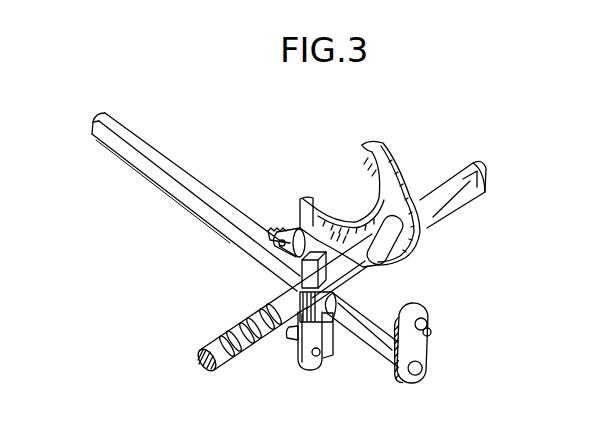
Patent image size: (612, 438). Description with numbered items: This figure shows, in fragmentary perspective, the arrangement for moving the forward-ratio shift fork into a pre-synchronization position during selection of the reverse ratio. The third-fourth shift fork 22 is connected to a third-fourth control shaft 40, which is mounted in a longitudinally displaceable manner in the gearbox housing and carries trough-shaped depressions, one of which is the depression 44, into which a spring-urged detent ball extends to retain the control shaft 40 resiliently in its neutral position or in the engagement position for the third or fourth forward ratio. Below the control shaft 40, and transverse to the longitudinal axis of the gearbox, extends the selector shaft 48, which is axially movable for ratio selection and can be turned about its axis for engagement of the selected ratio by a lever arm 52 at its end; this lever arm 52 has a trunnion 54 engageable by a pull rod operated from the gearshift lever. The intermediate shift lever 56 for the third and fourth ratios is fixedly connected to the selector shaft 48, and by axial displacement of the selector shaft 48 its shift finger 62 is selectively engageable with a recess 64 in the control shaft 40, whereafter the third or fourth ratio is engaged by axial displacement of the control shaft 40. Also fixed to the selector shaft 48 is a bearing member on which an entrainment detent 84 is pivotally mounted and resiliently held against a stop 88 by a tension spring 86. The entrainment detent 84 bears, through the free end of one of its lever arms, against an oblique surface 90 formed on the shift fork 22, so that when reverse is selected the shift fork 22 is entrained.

The shift fork 22 is at (392, 183).
The 3-4 control shaft 40 is at (478, 173).
The trough-shaped depression 44 is at (247, 325).
The selector shaft 48 is at (376, 352).
The lever arm 52 is at (428, 348).
The trunnion 54 is at (430, 322).
The intermediate shift lever 56 is at (334, 328).
The shift finger 62 is at (287, 325).
The recess 64 is at (345, 269).
The entrainment detent 84 is at (284, 260).
The tension spring 86 is at (275, 232).
The stop 88 is at (280, 243).
The oblique surface 90 is at (303, 212).